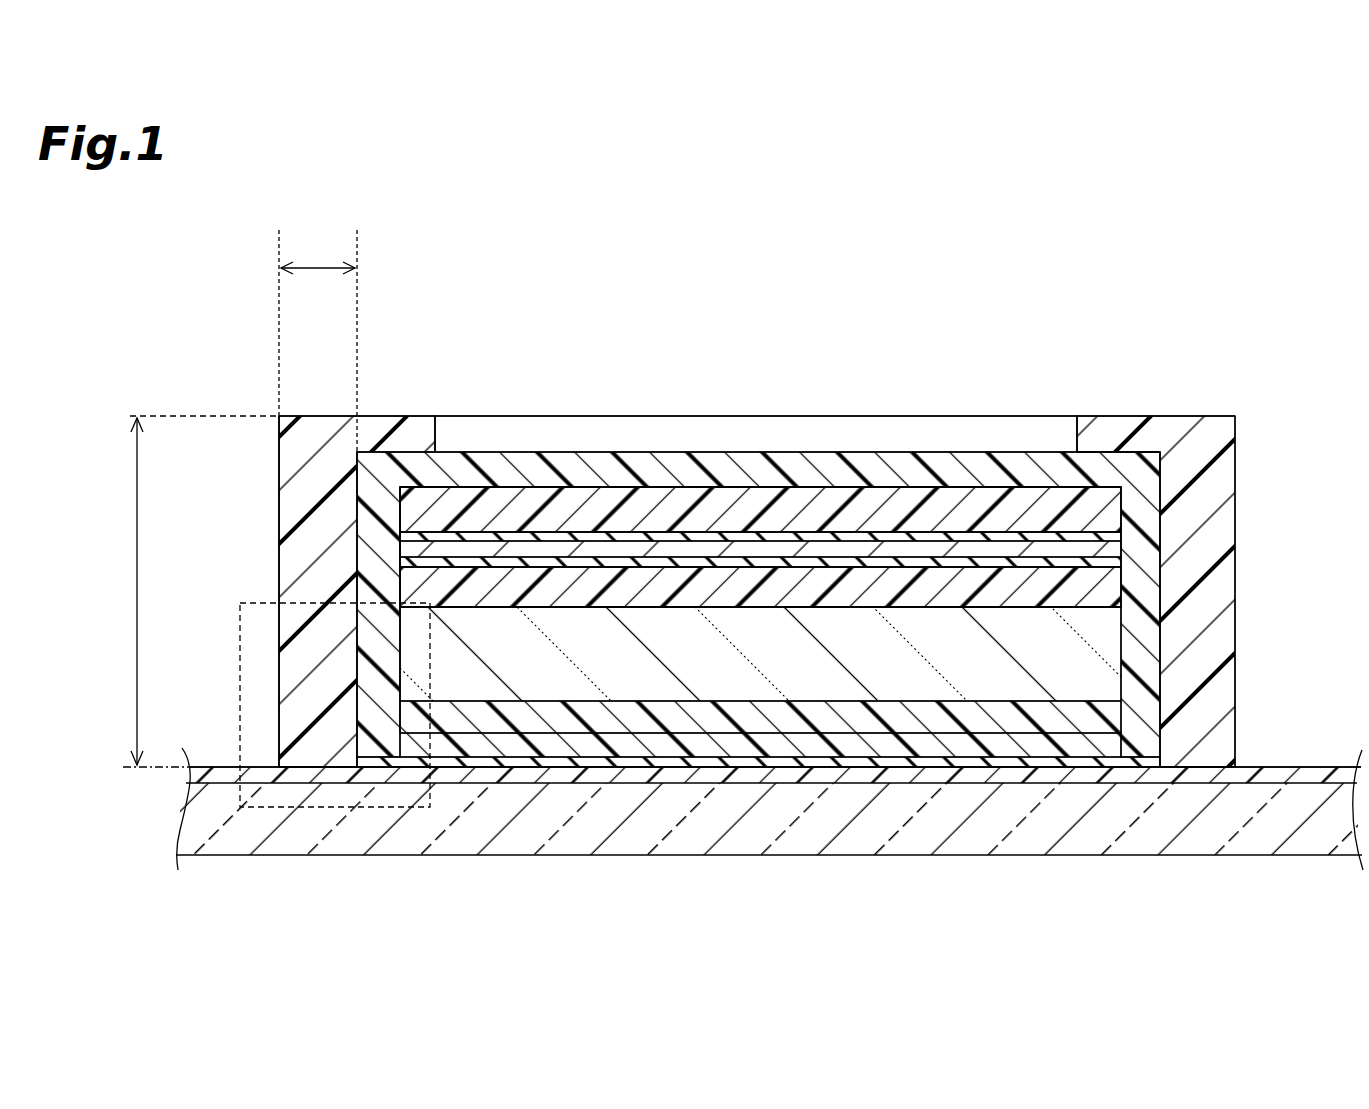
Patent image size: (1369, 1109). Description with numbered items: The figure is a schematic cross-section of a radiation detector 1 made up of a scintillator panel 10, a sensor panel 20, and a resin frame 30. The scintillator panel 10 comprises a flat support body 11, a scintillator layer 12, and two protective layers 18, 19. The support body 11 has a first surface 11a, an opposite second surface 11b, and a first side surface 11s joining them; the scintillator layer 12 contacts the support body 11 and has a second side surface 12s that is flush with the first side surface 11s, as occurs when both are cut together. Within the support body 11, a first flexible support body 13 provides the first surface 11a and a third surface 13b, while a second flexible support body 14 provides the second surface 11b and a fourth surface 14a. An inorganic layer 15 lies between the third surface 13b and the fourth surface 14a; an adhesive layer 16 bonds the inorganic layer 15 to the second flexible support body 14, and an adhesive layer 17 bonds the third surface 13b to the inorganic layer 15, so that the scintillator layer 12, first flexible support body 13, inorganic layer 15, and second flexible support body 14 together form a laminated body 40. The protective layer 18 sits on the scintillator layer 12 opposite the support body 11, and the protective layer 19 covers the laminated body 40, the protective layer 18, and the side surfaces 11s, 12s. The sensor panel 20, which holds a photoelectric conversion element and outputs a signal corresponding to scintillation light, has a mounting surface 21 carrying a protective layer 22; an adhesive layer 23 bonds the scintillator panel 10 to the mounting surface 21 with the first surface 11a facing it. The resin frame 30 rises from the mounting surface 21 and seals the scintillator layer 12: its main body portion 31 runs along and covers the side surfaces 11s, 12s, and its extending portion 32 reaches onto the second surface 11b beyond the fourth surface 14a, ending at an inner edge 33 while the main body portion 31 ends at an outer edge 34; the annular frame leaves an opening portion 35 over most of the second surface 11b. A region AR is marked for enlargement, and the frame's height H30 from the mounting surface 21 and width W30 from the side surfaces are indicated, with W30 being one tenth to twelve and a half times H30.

The radiation detector 1 is at (1268, 282).
The scintillator panel 10 is at (1098, 455).
The support body 11 is at (760, 547).
The first surface 11a is at (933, 614).
The second surface 11b is at (888, 487).
The first side surface 11s is at (395, 588).
The scintillator layer 12 is at (1100, 640).
The second side surface 12s is at (395, 635).
The first flexible support body 13 is at (1108, 590).
The third surface 13b is at (1008, 556).
The second flexible support body 14 is at (1090, 510).
The fourth surface 14a is at (826, 546).
The inorganic layer 15 is at (1108, 548).
The adhesive layer 16 is at (1040, 537).
The adhesive layer 17 is at (1068, 567).
The protective layer 18 is at (862, 712).
The protective layer 19 is at (780, 738).
The sensor panel 20 is at (1330, 810).
The mounting surface 21 is at (1268, 770).
The protective layer 22 is at (1316, 773).
The adhesive layer 23 is at (678, 758).
The resin frame 30 is at (310, 445).
The main body portion 31 is at (303, 497).
The extending portion 32 is at (416, 432).
The inner edge 33 is at (441, 440).
The outer edge 34 is at (274, 467).
The opening portion 35 is at (672, 437).
The laminated body 40 is at (739, 476).
The region AR is at (238, 682).
The height of resin frame H30 is at (134, 584).
The width of resin frame W30 is at (318, 328).